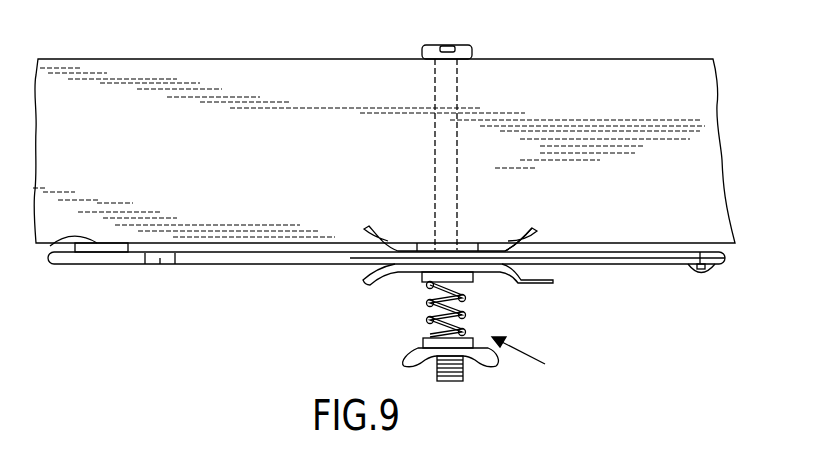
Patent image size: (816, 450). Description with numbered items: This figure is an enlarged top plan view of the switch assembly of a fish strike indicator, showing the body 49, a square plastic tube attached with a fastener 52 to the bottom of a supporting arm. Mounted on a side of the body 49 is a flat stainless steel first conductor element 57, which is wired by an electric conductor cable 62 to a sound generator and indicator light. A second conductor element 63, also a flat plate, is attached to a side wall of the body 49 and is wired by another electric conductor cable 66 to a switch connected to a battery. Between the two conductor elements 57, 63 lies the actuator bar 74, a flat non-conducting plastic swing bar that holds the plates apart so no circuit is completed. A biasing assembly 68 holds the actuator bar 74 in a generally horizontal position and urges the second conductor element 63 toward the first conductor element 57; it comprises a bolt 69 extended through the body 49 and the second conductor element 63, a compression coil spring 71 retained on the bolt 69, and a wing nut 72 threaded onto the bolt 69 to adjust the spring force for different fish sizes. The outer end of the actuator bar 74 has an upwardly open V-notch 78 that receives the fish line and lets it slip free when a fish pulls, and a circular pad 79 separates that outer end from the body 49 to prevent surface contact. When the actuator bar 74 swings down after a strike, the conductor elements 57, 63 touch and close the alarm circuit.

The body 49 is at (712, 206).
The fastener 52 is at (703, 270).
The first conductor element 57 is at (410, 240).
The electric conductor cable 62 is at (522, 232).
The second conductor element 63 is at (497, 268).
The electric conductor cable 66 is at (548, 283).
The biasing assembly 68 is at (533, 361).
The bolt 69 is at (465, 52).
The compression coil spring 71 is at (420, 318).
The wing nut 72 is at (485, 366).
The actuator bar 74 is at (238, 258).
The V-notch 78 is at (160, 264).
The circular pad 79 is at (53, 244).